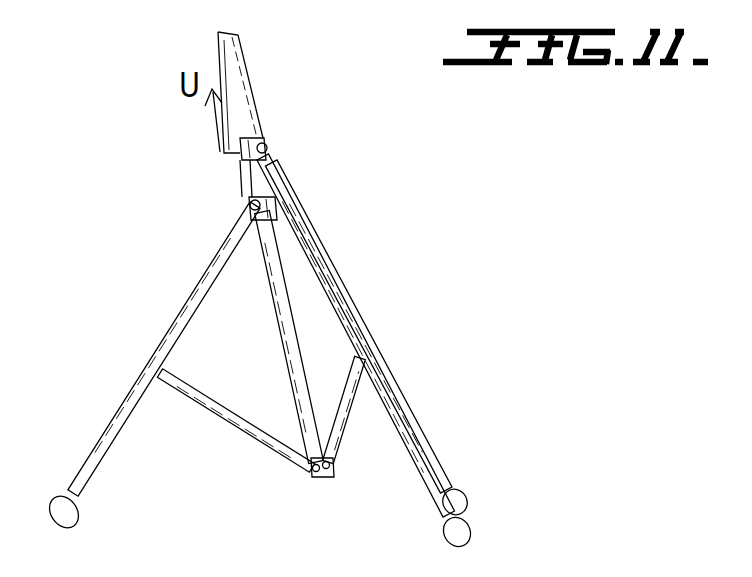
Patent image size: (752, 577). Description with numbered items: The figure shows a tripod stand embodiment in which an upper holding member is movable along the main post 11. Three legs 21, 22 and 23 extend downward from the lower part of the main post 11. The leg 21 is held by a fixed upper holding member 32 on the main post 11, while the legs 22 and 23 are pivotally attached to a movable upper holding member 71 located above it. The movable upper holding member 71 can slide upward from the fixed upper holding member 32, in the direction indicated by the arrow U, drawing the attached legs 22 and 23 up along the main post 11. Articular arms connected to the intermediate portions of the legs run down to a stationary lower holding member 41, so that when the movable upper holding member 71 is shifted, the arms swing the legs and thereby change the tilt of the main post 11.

The main post 11 is at (250, 90).
The movable upper holding member 71 is at (257, 127).
The leg 22 is at (303, 218).
The leg 23 is at (393, 387).
The fixed upper holding member 32 is at (250, 194).
The leg 21 is at (197, 295).
The stationary lower holding member 41 is at (313, 477).